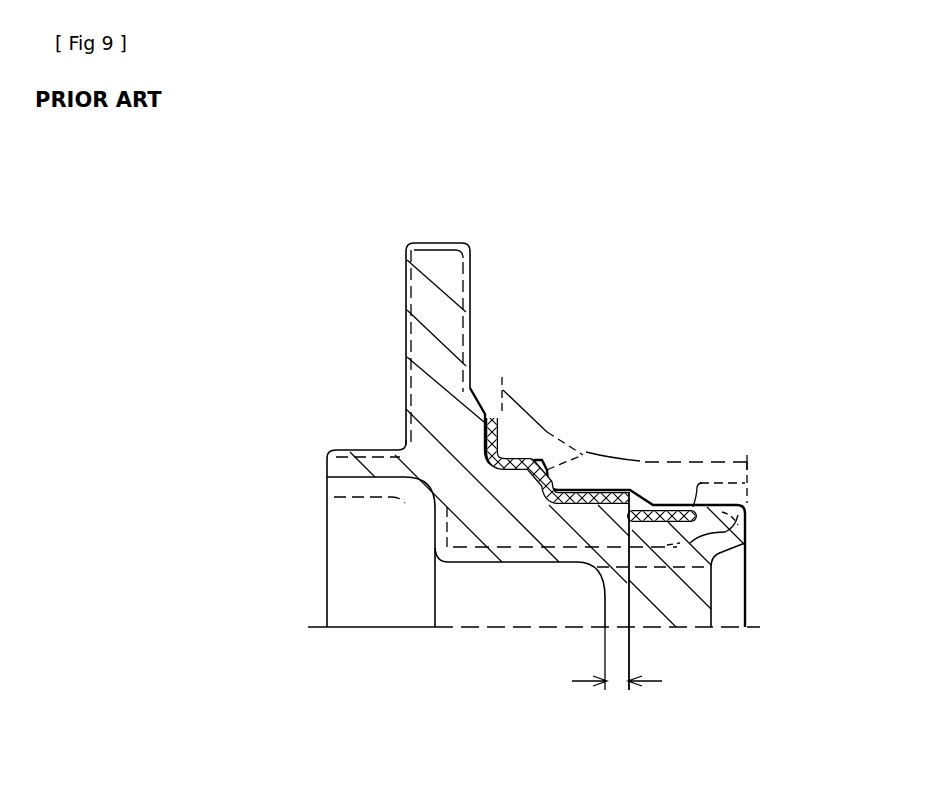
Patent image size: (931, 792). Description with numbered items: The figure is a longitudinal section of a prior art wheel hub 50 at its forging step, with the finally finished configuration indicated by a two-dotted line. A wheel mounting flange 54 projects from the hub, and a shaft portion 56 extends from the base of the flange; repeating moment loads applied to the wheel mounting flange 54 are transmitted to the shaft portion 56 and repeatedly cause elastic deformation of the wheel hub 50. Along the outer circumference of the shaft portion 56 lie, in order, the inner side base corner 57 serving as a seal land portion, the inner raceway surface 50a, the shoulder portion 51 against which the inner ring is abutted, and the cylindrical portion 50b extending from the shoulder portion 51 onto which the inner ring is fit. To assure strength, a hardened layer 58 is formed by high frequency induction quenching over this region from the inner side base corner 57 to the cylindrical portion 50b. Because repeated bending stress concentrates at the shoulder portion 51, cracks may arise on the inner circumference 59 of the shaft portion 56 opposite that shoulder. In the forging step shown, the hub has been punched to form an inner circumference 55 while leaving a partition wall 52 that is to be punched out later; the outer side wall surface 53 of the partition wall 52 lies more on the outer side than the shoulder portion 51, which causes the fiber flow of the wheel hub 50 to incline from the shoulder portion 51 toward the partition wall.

The wheel hub 50 is at (345, 493).
The inner raceway surface 50a is at (582, 457).
The cylindrical portion 50b is at (748, 488).
The shoulder portion 51 is at (651, 498).
The partition wall 52 is at (703, 588).
The outer side wall surface 53 is at (622, 627).
The wheel mounting flange 54 is at (430, 262).
The inner circumference 55 is at (510, 563).
The shaft portion 56 is at (712, 462).
The inner side base corner 57 is at (505, 452).
The hardened layer 58 is at (430, 433).
The inner circumference 59 is at (435, 568).